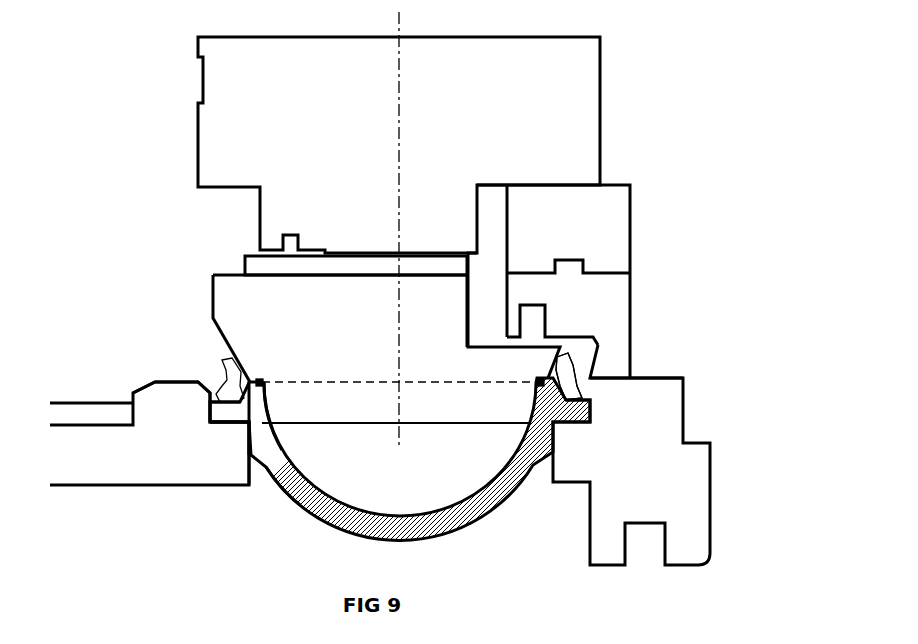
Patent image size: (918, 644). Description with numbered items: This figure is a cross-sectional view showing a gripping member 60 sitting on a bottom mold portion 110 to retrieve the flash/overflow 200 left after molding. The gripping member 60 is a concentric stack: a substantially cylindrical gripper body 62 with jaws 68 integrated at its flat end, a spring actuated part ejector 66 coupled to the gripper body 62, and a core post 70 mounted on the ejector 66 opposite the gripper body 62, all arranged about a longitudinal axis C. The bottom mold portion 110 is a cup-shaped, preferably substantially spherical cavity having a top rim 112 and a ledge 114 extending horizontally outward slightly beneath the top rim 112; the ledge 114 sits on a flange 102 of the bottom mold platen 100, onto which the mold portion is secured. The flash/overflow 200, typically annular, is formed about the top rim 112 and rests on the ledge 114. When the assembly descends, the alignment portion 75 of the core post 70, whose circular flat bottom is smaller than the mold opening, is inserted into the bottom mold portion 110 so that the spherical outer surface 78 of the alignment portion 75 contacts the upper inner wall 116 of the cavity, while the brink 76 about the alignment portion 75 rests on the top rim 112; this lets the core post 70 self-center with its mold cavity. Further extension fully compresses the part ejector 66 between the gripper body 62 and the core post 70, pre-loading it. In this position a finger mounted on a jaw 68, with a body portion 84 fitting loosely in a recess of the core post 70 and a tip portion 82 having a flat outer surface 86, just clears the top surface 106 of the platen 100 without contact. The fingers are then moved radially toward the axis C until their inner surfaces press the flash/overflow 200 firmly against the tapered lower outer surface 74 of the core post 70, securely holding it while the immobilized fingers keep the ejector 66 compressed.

The gripping member 60 is at (348, 145).
The gripper body 62 is at (399, 145).
The part ejector 66 is at (330, 270).
The jaw 68 is at (553, 281).
The core post 70 is at (340, 328).
The lower outer surface 74 is at (590, 335).
The alignment portion 75 is at (488, 402).
The brink 76 is at (255, 425).
The outer surface of alignment portion 78 is at (268, 402).
The tip portion 82 is at (608, 352).
The body portion 84 is at (552, 316).
The flat outer surface 86 is at (578, 372).
The bottom mold platen 100 is at (380, 471).
The flange 102 is at (223, 435).
The top surface 106 is at (635, 385).
The bottom mold portion 110 is at (447, 520).
The top rim 112 is at (243, 430).
The ledge 114 is at (212, 420).
The upper inner wall 116 is at (280, 480).
The flash/overflow 200 is at (222, 382).
The longitudinal axis C is at (399, 152).